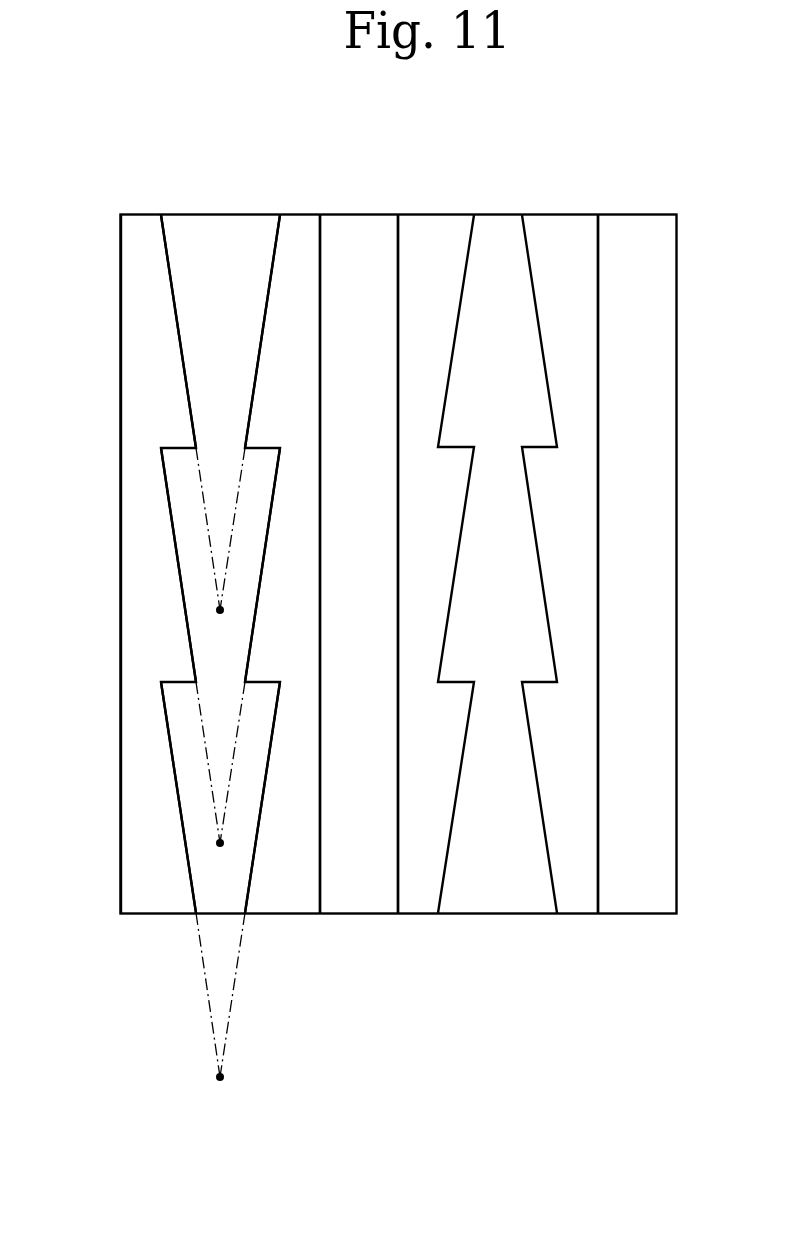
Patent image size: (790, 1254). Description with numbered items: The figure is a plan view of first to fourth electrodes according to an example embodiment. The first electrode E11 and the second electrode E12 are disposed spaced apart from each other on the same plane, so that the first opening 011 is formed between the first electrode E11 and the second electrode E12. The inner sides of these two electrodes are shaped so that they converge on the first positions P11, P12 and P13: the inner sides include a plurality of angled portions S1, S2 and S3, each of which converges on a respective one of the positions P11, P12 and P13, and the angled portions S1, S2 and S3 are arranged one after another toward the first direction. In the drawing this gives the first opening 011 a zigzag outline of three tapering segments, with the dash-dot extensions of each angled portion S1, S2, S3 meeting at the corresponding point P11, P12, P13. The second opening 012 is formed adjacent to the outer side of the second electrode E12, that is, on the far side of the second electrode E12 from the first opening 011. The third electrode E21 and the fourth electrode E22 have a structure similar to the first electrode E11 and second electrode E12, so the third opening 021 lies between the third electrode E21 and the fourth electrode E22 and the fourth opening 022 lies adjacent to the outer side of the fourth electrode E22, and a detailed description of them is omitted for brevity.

The first opening 011 is at (200, 228).
The second opening 012 is at (356, 228).
The third opening 021 is at (502, 228).
The fourth opening 022 is at (642, 228).
The angled portion S1 is at (183, 367).
The angled portion S2 is at (183, 600).
The angled portion S3 is at (183, 832).
The first position P11 is at (220, 545).
The first position P12 is at (220, 779).
The first position P13 is at (220, 1012).
The first electrode E11 is at (156, 903).
The second electrode E12 is at (280, 903).
The third electrode E21 is at (417, 902).
The fourth electrode E22 is at (577, 902).